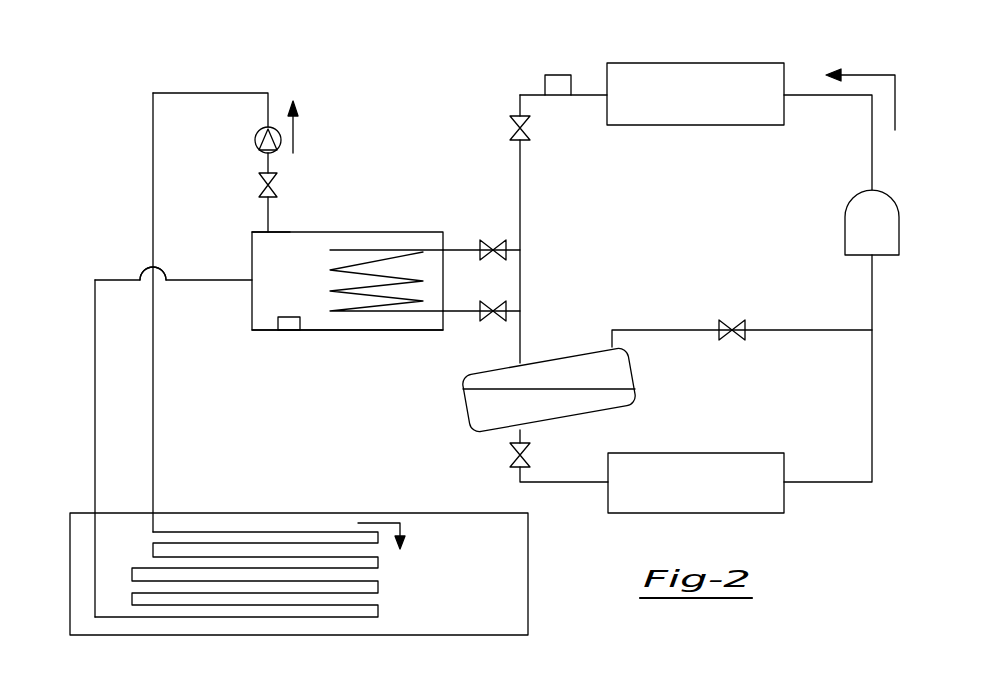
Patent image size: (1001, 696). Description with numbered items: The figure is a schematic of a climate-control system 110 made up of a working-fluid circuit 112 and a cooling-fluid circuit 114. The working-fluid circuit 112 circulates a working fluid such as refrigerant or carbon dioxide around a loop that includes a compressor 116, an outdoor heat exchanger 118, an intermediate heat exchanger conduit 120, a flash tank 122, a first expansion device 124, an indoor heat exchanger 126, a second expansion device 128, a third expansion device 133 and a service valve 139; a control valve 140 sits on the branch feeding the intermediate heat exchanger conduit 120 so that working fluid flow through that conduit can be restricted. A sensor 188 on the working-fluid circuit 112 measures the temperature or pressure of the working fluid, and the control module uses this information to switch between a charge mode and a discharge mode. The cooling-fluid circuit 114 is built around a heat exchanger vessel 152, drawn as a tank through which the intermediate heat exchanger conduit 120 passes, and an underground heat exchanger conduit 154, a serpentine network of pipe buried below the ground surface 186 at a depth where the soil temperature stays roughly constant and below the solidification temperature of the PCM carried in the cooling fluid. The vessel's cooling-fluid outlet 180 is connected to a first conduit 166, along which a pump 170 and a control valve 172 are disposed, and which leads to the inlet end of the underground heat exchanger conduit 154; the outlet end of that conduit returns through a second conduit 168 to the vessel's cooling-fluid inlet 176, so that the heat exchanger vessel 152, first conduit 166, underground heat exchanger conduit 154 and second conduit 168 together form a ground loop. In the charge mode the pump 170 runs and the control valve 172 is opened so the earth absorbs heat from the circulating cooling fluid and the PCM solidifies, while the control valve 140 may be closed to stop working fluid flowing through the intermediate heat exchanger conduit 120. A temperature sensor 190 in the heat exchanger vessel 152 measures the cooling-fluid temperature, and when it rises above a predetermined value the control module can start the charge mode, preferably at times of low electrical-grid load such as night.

The climate-control system 110 is at (426, 122).
The working-fluid circuit 112 is at (916, 148).
The cooling-fluid circuit 114 is at (130, 259).
The compressor 116 is at (845, 225).
The outdoor heat exchanger 118 is at (735, 63).
The intermediate heat exchanger conduit 120 is at (410, 250).
The flash tank 122 is at (465, 402).
The first expansion device 124 is at (512, 455).
The indoor heat exchanger 126 is at (755, 453).
The second expansion device 128 is at (732, 320).
The third expansion device 133 is at (510, 128).
The service valve 139 is at (487, 321).
The control valve 140 is at (492, 240).
The heat exchanger vessel 152 is at (270, 330).
The underground heat exchanger conduit 154 is at (378, 587).
The first conduit 166 is at (153, 410).
The second conduit 168 is at (95, 410).
The pump 170 is at (255, 140).
The control valve 172 is at (259, 185).
The cooling-fluid inlet 176 is at (252, 280).
The cooling-fluid outlet 180 is at (270, 232).
The ground surface 186 is at (245, 513).
The sensor 188 is at (556, 75).
The temperature sensor 190 is at (283, 317).